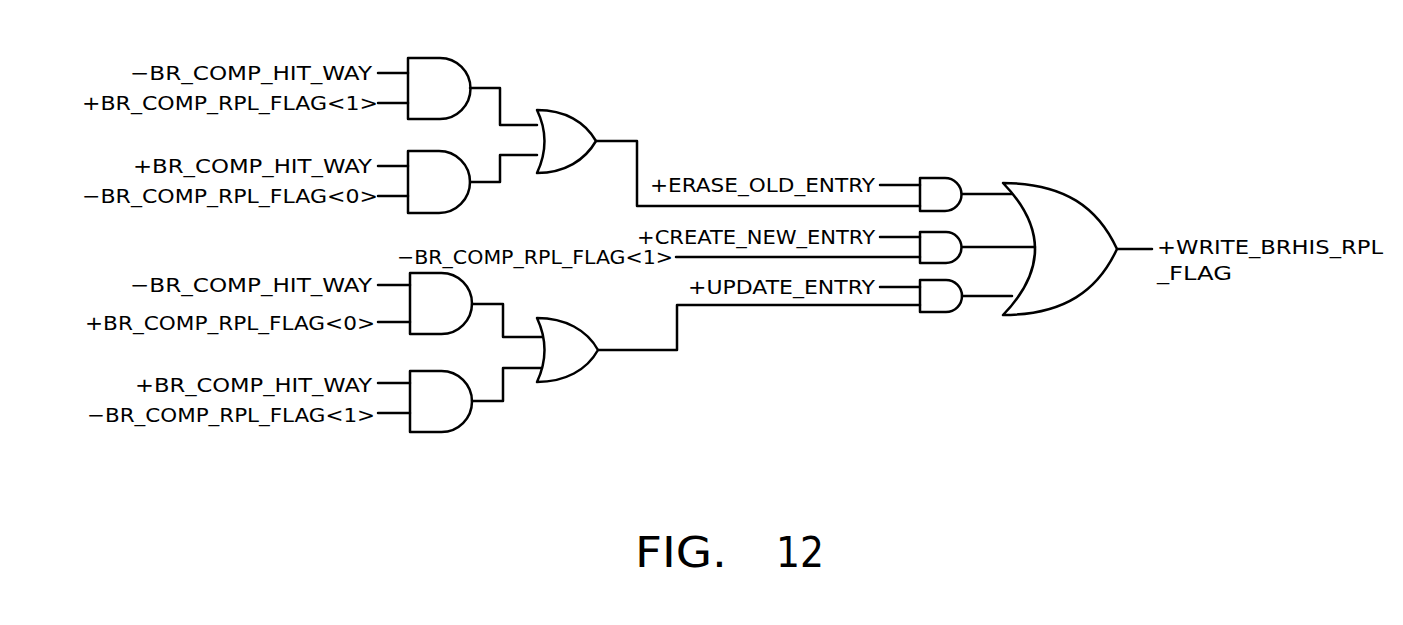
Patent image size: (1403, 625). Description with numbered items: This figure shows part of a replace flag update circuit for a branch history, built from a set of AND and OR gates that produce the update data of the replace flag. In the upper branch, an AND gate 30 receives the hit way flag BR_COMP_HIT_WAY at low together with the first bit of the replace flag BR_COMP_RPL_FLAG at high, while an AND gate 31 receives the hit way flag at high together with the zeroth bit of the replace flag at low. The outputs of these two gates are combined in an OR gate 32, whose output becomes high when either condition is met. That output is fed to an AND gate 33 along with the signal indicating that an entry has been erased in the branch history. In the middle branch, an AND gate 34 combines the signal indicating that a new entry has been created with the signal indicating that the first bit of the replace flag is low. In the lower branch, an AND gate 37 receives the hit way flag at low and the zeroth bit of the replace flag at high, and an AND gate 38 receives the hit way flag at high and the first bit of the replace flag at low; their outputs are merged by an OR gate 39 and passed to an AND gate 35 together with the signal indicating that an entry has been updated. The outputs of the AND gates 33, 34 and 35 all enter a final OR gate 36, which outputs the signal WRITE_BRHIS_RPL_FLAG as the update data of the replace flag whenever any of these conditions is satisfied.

The AND gate 30 is at (456, 58).
The AND gate 31 is at (466, 149).
The OR gate 32 is at (584, 121).
The AND gate 33 is at (952, 179).
The AND gate 34 is at (961, 241).
The AND gate 35 is at (963, 293).
The OR gate 36 is at (1097, 209).
The AND gate 37 is at (470, 287).
The AND gate 38 is at (476, 366).
The OR gate 39 is at (590, 344).